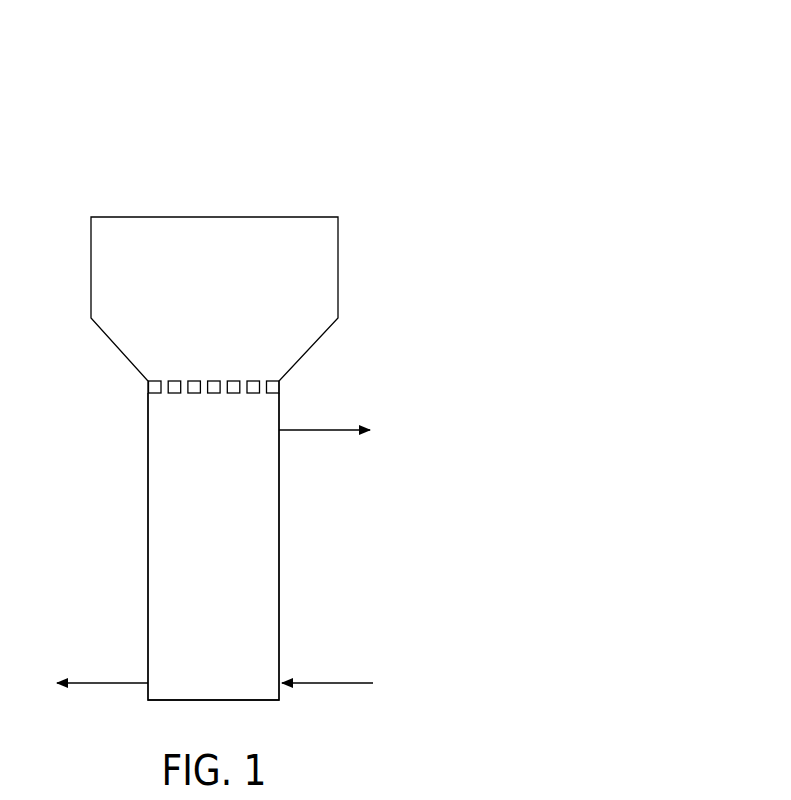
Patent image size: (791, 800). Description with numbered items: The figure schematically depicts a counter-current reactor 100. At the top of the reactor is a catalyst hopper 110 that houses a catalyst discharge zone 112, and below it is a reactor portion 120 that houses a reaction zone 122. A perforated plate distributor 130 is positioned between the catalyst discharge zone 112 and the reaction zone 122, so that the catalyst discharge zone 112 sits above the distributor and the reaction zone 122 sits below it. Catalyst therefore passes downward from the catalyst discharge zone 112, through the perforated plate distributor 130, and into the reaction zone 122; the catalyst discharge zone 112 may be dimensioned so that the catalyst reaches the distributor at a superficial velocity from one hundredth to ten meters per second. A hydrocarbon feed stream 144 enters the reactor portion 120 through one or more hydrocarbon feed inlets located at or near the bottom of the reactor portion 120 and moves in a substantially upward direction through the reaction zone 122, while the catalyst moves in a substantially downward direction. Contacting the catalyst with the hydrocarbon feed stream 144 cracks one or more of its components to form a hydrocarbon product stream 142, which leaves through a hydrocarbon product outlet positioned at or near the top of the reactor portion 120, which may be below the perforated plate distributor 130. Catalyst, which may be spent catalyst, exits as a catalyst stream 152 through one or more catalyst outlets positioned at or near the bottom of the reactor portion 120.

The counter-current reactor 100 is at (362, 160).
The catalyst hopper 110 is at (338, 235).
The catalyst discharge zone 112 is at (197, 309).
The perforated plate distributor 130 is at (280, 385).
The reaction zone 122 is at (187, 539).
The reactor portion 120 is at (279, 538).
The hydrocarbon product stream 142 is at (318, 431).
The catalyst stream 152 is at (108, 682).
The hydrocarbon feed stream 144 is at (333, 682).